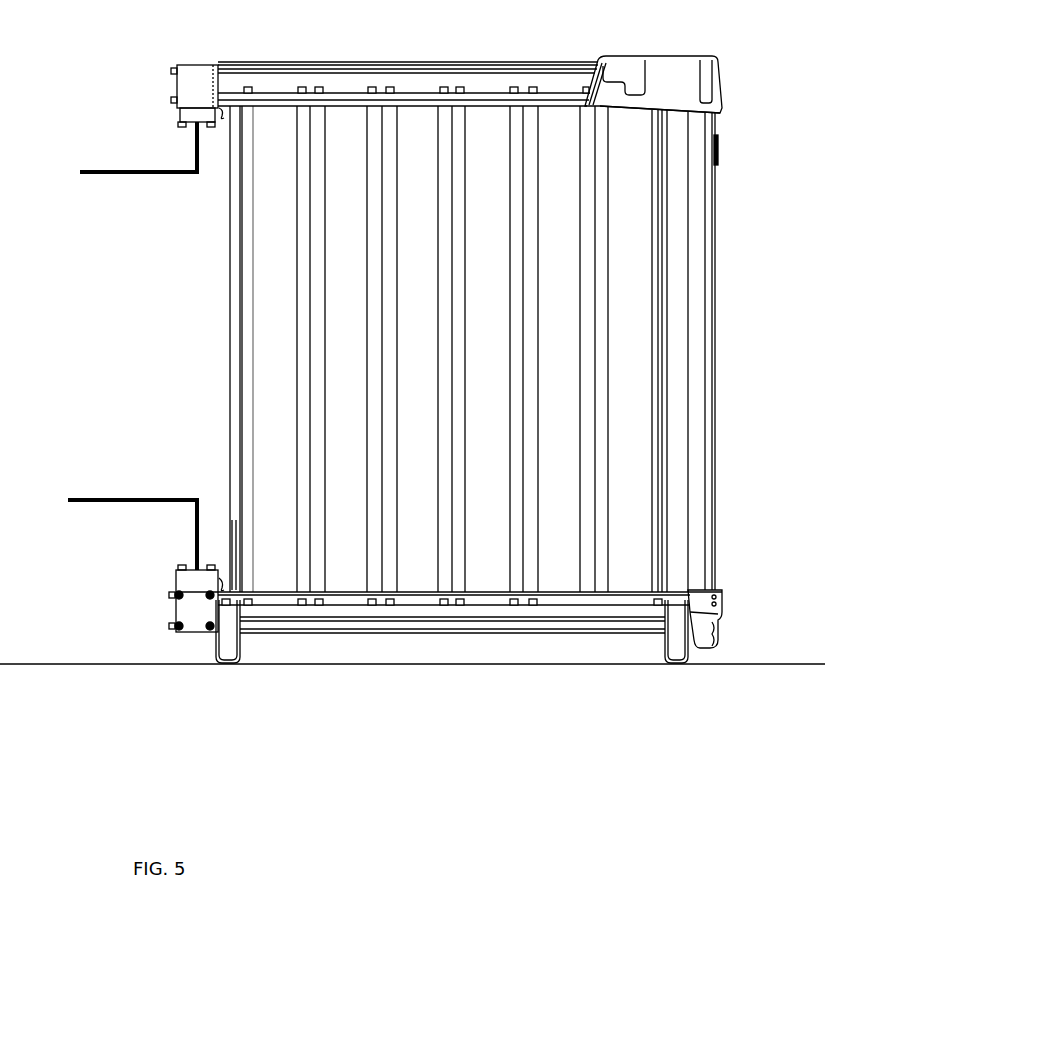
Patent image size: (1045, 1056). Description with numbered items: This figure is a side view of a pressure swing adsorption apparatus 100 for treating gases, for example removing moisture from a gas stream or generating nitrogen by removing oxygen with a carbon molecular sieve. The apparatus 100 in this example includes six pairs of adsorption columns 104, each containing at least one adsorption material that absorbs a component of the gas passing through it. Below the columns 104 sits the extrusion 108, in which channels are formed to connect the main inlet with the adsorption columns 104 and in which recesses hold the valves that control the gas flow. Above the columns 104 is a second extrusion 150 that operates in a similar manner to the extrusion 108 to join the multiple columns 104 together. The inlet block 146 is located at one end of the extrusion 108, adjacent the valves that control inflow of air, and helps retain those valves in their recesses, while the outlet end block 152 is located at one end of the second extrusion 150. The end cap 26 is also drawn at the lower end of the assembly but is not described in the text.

The pressure swing adsorption apparatus 100 is at (428, 792).
The adsorption column 104 is at (277, 387).
The extrusion 108 is at (350, 612).
The second extrusion 150 is at (342, 78).
The outlet end block 152 is at (195, 90).
The inlet block 146 is at (190, 620).
The lower end cap 26 is at (652, 608).